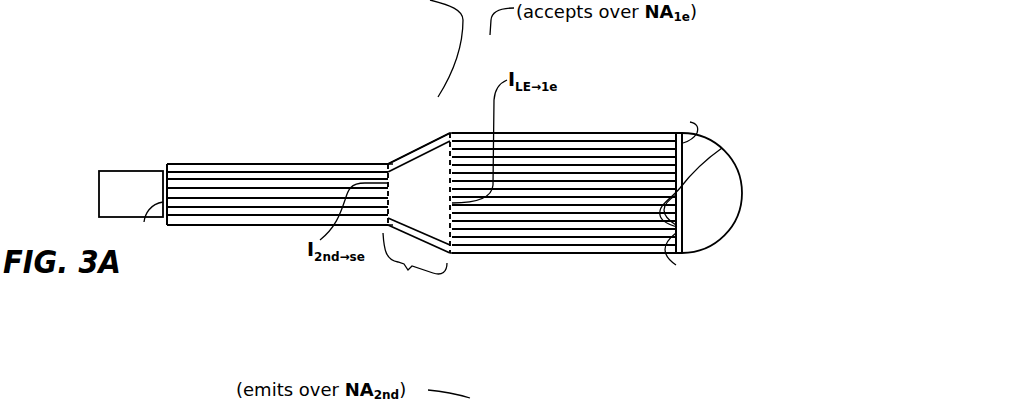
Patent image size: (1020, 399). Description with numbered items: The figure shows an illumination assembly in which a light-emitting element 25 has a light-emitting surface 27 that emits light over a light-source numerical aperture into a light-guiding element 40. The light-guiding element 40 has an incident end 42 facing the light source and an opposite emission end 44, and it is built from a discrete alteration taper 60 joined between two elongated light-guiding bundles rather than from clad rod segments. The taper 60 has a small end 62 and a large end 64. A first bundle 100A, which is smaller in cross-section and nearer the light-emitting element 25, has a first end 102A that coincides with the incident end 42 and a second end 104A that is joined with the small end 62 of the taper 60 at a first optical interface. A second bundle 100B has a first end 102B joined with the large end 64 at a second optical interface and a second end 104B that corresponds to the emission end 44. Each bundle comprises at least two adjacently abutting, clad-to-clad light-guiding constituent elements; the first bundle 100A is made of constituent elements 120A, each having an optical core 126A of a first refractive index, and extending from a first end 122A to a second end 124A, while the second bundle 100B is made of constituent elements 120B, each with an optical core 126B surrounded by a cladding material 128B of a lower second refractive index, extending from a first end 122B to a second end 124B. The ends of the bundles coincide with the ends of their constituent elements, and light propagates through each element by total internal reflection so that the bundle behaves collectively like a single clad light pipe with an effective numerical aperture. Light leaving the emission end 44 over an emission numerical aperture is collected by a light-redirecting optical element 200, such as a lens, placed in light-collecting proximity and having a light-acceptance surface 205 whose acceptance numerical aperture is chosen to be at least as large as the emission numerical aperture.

The light-emitting element 25 is at (131, 194).
The light-emitting surface 27 is at (166, 202).
The light-guiding element 40 is at (448, 285).
The incident end 42 is at (171, 194).
The emission end 44 is at (679, 193).
The alteration taper 60 is at (415, 267).
The small end 62 is at (387, 161).
The large end 64 is at (450, 134).
The first bundle 100A is at (226, 235).
The second bundle 100B is at (577, 132).
The first end of first bundle 102A is at (168, 165).
The first end of second bundle 102B is at (455, 130).
The second end of first bundle 104A is at (388, 162).
The second end of second bundle 104B is at (676, 258).
The light-guiding constituent element of first bundle 120A is at (207, 177).
The light-guiding constituent element of second bundle 120B is at (587, 227).
The first end of constituent element of first bundle 122A is at (168, 165).
The first end of constituent element of second bundle 122B is at (452, 229).
The second end of constituent element of first bundle 124A is at (388, 160).
The second end of constituent element of second bundle 124B is at (683, 150).
The optical core of first-bundle constituent element 126A is at (223, 178).
The optical core of second-bundle constituent element 126B is at (627, 228).
The cladding material of second-bundle constituent element 128B is at (262, 180).
The light-redirecting optical element 200 is at (712, 193).
The light-acceptance surface 205 is at (690, 122).